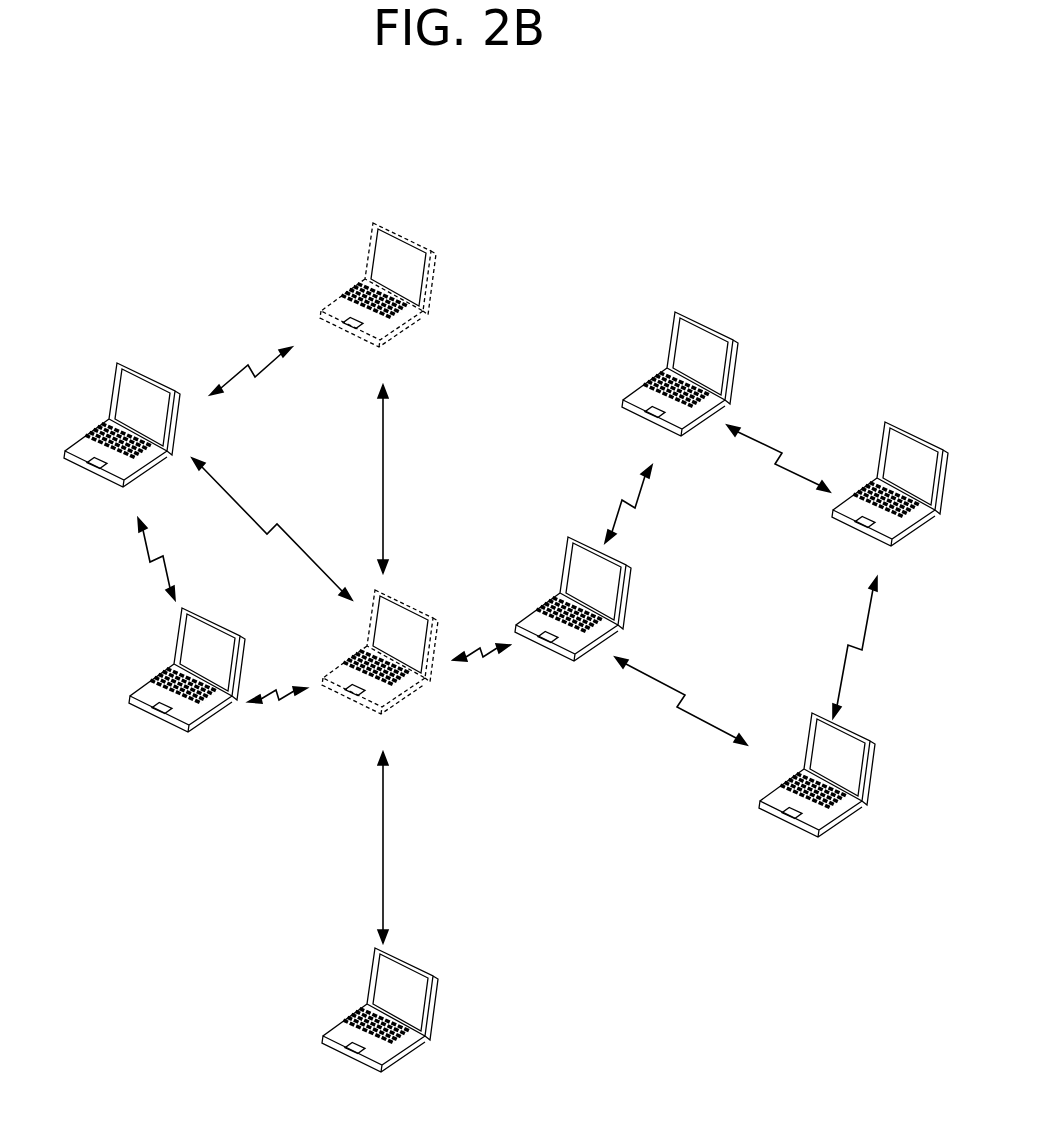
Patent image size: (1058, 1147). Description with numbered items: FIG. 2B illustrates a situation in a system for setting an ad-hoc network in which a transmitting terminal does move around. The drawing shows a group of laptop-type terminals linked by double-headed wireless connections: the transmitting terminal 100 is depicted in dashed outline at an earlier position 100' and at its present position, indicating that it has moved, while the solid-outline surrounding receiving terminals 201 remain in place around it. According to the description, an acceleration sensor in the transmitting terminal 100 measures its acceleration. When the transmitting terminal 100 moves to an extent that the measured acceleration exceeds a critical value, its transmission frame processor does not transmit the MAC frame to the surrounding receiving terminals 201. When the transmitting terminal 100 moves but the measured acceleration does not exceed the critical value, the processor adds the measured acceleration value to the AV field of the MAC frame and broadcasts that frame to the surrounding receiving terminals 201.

The receiving terminal 201 is at (117, 376).
The transmitting terminal 100 is at (402, 844).
The laptop computer (wireless communication apparatus, variant) 100' is at (378, 269).